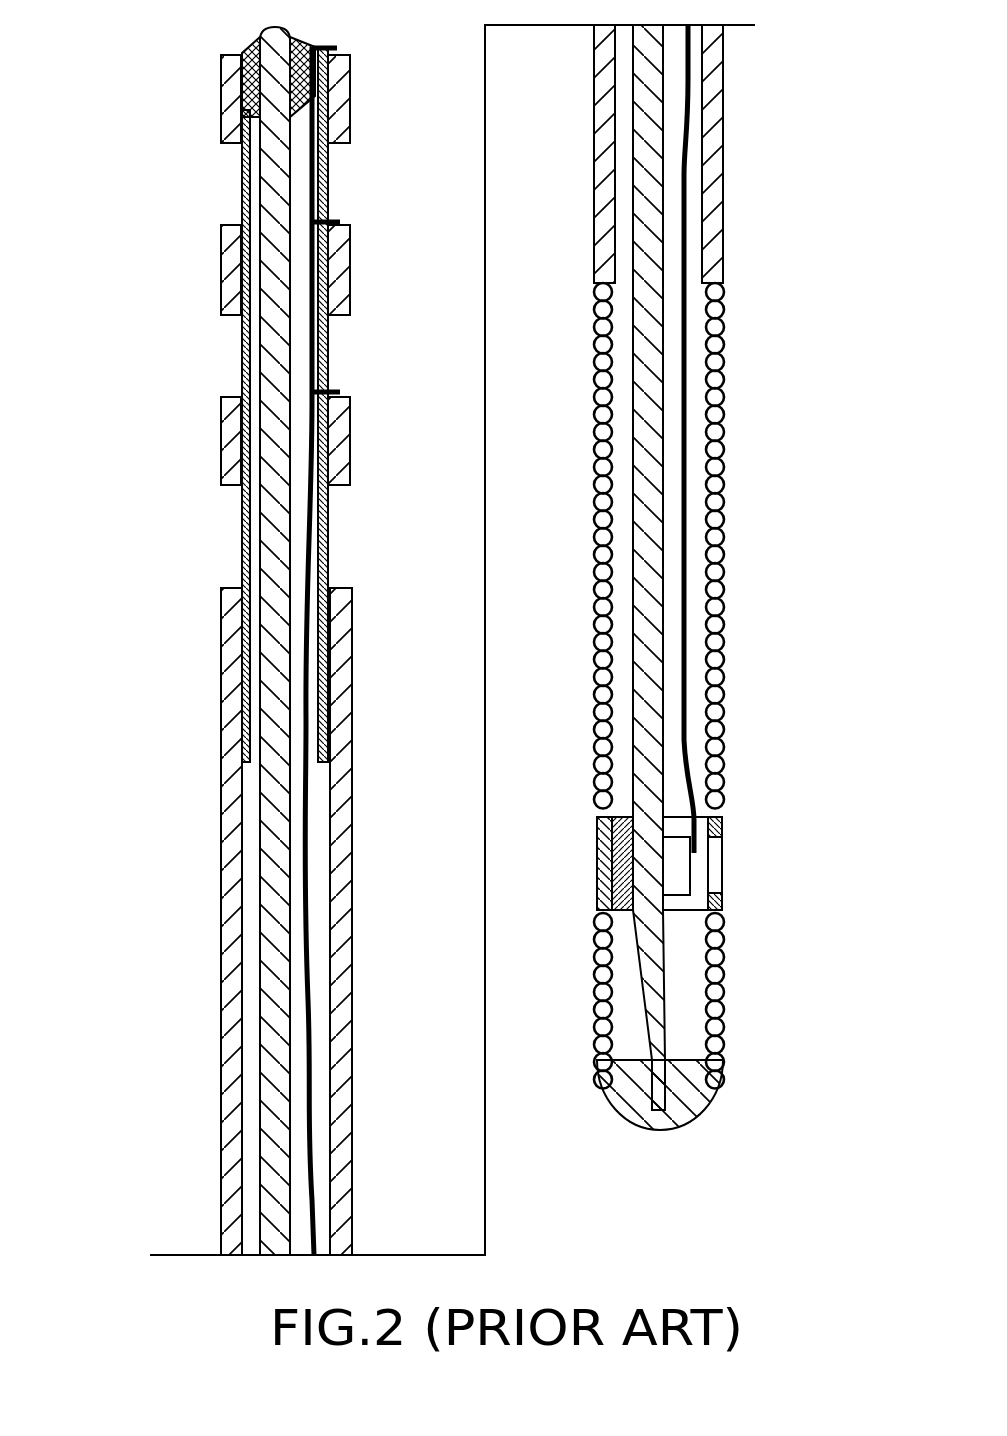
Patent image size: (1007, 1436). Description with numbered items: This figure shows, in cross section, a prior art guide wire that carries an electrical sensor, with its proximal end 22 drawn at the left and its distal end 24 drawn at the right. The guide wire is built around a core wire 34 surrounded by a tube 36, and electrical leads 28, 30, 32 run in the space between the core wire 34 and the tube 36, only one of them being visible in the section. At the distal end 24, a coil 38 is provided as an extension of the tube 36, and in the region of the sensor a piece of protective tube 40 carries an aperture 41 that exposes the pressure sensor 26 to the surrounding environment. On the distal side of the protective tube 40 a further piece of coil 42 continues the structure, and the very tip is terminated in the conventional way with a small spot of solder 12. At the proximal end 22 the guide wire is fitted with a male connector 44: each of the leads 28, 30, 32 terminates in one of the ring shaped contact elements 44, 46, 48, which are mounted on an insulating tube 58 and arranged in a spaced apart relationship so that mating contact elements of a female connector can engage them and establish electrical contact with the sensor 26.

The spot of solder 12 is at (697, 1125).
The proximal end 22 is at (185, 1052).
The distal end 24 is at (762, 530).
The pressure sensor 26 is at (690, 876).
The electrical lead 28 is at (340, 392).
The electrical lead 30 is at (340, 222).
The electrical lead 32 is at (335, 47).
The core wire 34 is at (272, 945).
The tube 36 is at (222, 858).
The coil 38 is at (725, 650).
The protective tube 40 is at (722, 898).
The aperture 41 is at (738, 830).
The further piece of coil 42 is at (725, 1018).
The male connector / ring shaped contact element 44 is at (222, 437).
The ring shaped contact element 46 is at (222, 276).
The ring shaped contact element 48 is at (227, 120).
The insulating tube 58 is at (242, 537).